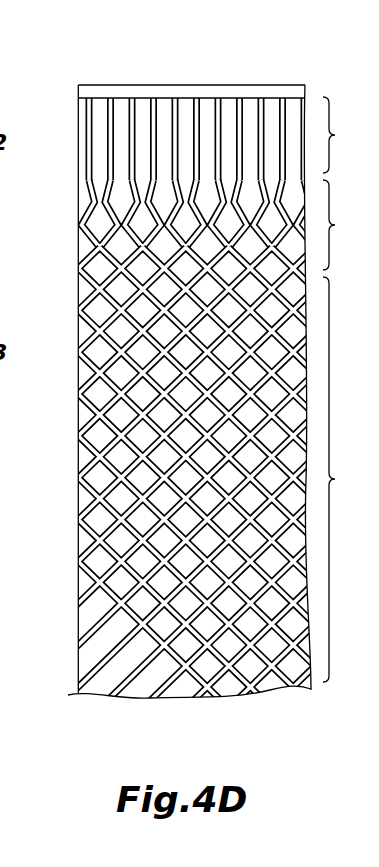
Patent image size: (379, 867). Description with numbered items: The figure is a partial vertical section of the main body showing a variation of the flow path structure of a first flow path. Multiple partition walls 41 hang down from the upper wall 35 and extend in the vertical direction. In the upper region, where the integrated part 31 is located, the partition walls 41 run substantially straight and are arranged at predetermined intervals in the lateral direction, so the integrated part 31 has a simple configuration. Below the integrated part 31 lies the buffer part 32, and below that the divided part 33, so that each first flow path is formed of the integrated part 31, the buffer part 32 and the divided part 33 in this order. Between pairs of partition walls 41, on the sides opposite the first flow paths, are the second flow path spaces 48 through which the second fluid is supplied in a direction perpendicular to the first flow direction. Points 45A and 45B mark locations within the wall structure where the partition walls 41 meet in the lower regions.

The integrated part 31 is at (347, 135).
The buffer part 32 is at (347, 225).
The divided part 33 is at (347, 479).
The upper wall 35 is at (226, 97).
The partition walls 41 is at (110, 160).
The crossing points of wires 45A is at (82, 327).
The contact points of wires 45B is at (110, 298).
The second flow path spaces 48 is at (166, 130).